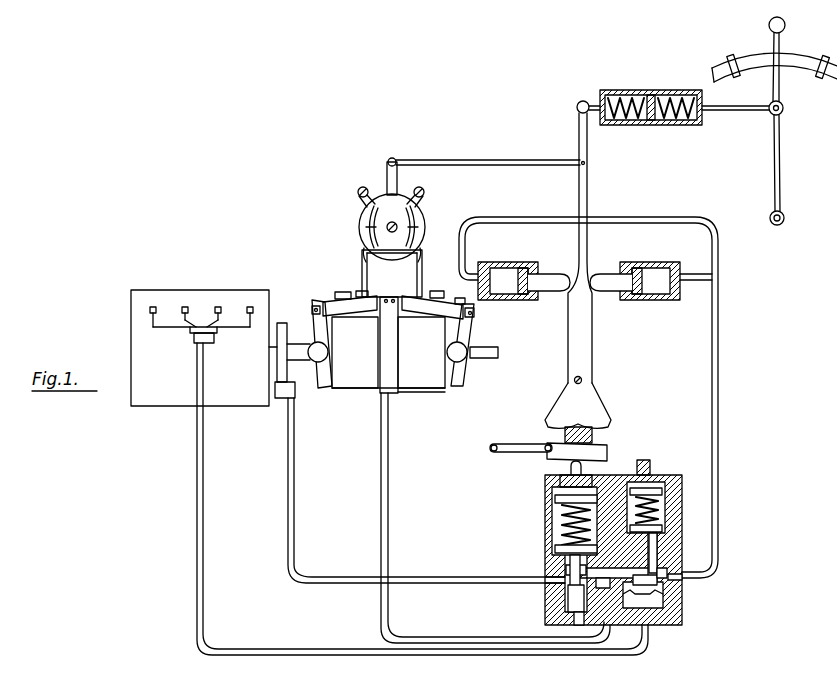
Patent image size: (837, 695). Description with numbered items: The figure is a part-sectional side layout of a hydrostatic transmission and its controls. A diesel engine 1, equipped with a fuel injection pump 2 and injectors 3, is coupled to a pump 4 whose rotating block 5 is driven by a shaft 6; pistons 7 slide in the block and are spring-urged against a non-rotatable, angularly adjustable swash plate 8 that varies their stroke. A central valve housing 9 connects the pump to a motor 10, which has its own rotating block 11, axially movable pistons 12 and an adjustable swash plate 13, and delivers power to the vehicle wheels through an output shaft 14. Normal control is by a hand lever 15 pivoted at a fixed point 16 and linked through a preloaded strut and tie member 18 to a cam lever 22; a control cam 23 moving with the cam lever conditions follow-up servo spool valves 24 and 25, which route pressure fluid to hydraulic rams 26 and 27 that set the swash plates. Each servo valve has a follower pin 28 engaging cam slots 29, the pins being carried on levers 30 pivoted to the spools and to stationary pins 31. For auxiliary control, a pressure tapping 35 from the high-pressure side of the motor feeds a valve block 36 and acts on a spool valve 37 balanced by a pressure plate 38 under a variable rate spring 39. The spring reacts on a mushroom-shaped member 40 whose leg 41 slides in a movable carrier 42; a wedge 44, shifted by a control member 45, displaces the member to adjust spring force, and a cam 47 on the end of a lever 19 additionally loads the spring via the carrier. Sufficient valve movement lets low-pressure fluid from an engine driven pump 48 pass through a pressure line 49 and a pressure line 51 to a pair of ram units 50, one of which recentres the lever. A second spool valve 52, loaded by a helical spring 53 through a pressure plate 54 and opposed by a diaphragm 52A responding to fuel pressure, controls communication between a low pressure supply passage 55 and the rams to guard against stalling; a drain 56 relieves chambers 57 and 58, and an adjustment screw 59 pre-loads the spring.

The diesel engine 1 is at (187, 388).
The fuel injection pump 2 is at (201, 333).
The injectors 3 is at (153, 307).
The pump 4 is at (347, 390).
The rotating block 5 is at (351, 356).
The shaft 6 is at (301, 350).
The pistons 7 is at (313, 307).
The swash plate 8 is at (311, 330).
The central valve housing 9 is at (388, 366).
The motor 10 is at (426, 392).
The rotating block 11 is at (414, 358).
The pistons 12 is at (464, 323).
The swash plate 13 is at (462, 372).
The output shaft 14 is at (479, 352).
The hand lever 15 is at (774, 42).
The fixed point 16 is at (770, 218).
The preloaded strut and tie member 18 is at (677, 128).
The lever 19 is at (578, 237).
The cam lever 22 is at (383, 192).
The control cam 23 is at (393, 189).
The servo spool valve 24 is at (446, 297).
The servo spool valve 25 is at (350, 294).
The hydraulic ram 26 is at (450, 312).
The hydraulic ram 27 is at (331, 300).
The follower pin 28 is at (368, 228).
The cam slots 29 is at (372, 211).
The levers 30 is at (362, 251).
The stationary pins 31 is at (358, 191).
The pressure tapping 35 is at (395, 393).
The valve block 36 is at (678, 607).
The spool valve 37 is at (571, 592).
The pressure plate 38 is at (566, 557).
The variable rate spring 39 is at (565, 517).
The mushroom-shaped member 40 is at (568, 500).
The leg 41 is at (553, 479).
The movable carrier 42 is at (573, 471).
The wedge 44 is at (614, 449).
The control member 45 is at (505, 447).
The cam 47 is at (581, 421).
The engine driven pump 48 is at (285, 401).
The pressure line 49 is at (288, 450).
The ram units 50 is at (490, 263).
The pressure line 51 is at (717, 413).
The second spool valve 52 is at (660, 566).
The diaphragm 52A is at (652, 608).
The helical spring 53 is at (667, 508).
The pressure plate 54 is at (660, 523).
The low pressure supply passage 55 is at (604, 598).
The drain 56 is at (668, 586).
The chamber 57 is at (560, 537).
The chamber 58 is at (667, 572).
The adjustment screw 59 is at (644, 461).